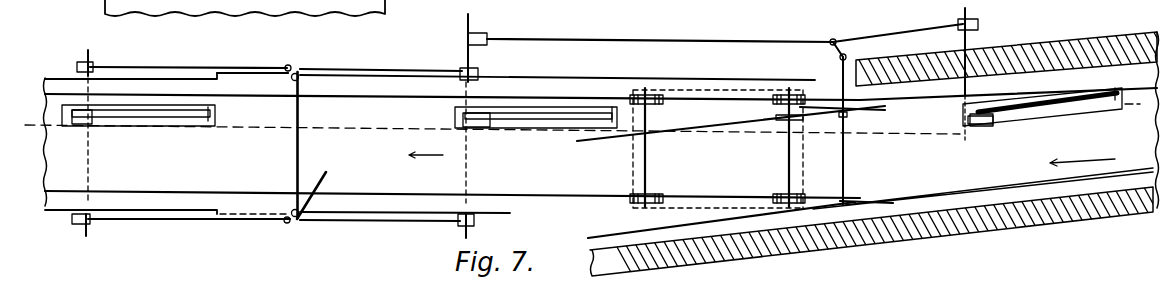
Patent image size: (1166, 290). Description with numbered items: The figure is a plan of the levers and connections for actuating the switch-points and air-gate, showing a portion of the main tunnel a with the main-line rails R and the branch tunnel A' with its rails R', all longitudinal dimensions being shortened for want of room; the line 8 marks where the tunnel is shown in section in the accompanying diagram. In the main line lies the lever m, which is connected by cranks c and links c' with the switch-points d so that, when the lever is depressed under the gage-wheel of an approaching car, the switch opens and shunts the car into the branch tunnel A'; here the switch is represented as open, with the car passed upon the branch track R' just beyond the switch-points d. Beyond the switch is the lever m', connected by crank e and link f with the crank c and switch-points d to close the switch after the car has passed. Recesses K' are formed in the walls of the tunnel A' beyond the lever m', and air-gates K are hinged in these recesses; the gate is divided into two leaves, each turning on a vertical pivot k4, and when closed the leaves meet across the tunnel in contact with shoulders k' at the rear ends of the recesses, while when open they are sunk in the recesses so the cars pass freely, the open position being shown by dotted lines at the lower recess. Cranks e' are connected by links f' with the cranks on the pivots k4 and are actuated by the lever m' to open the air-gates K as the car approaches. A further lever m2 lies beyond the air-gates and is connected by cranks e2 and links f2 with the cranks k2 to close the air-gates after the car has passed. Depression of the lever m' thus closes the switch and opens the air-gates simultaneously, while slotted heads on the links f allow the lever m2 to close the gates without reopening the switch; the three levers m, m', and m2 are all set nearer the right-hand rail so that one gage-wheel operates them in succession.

The crank e2 is at (60, 224).
The link f2 is at (180, 236).
The recess K' is at (252, 82).
The pivot k4 is at (299, 71).
The link f' is at (381, 145).
The crank e' is at (472, 130).
The link f is at (660, 28).
The link c' is at (890, 104).
The crank c is at (904, 75).
The section line 8 is at (581, 115).
The air-gate K is at (296, 145).
The branch rail R' is at (601, 143).
The branch tunnel A' is at (399, 143).
The crank e is at (480, 135).
The lever m' is at (536, 135).
The lever m2 is at (155, 118).
The main-line rail R is at (871, 155).
The switch-point d is at (881, 111).
The main tunnel a is at (1061, 120).
The lever m is at (1042, 117).
The shoulder k' is at (315, 192).
The crank k2 is at (295, 220).